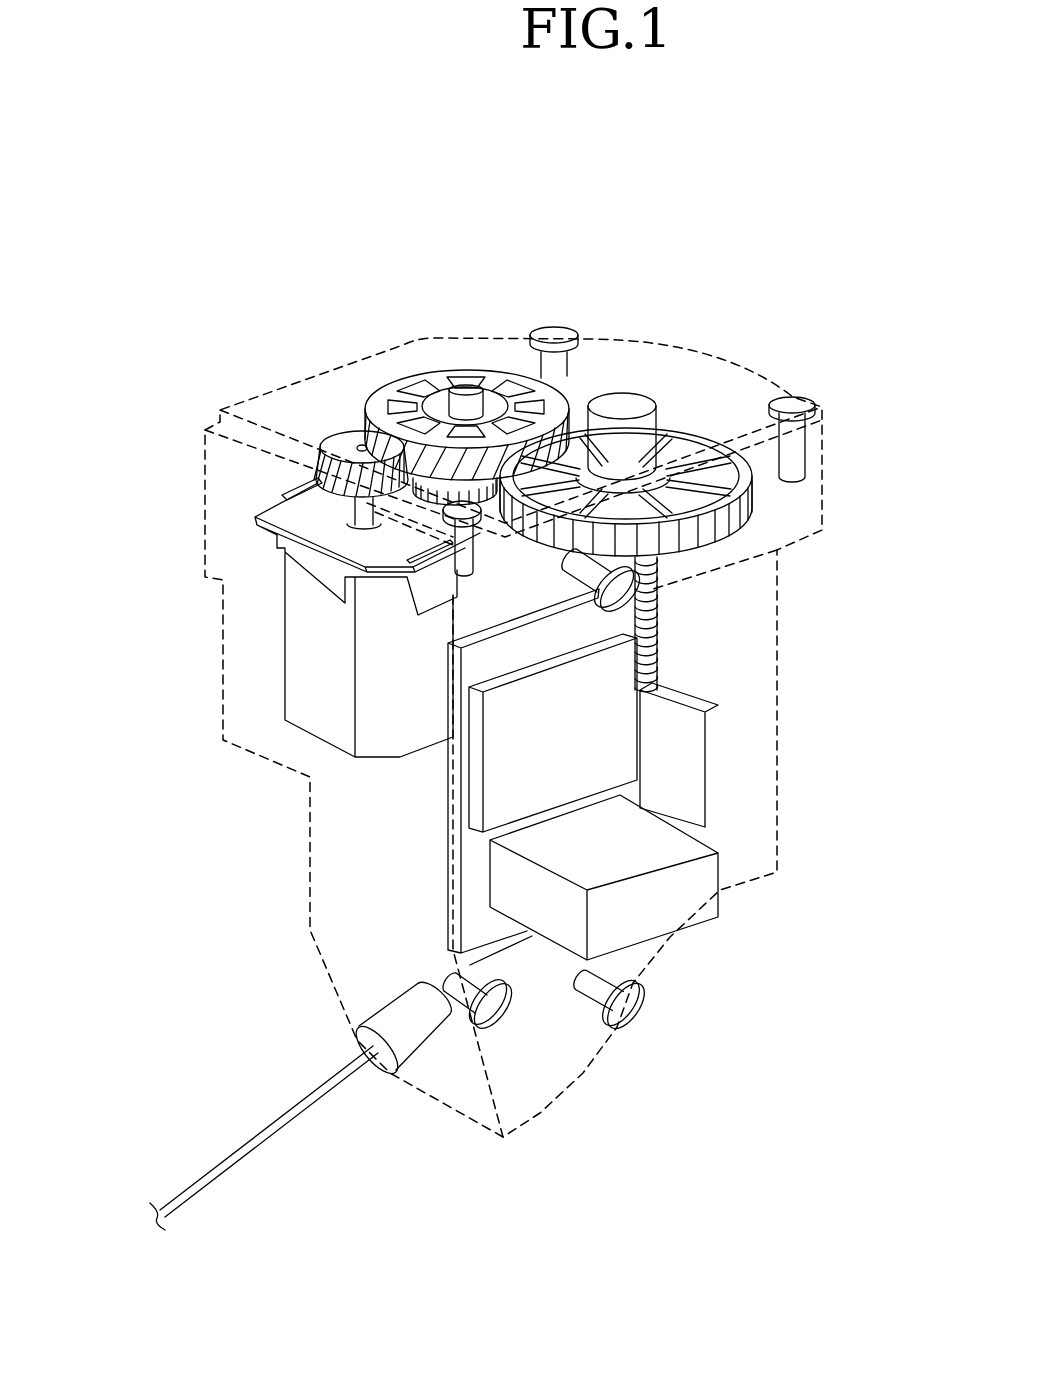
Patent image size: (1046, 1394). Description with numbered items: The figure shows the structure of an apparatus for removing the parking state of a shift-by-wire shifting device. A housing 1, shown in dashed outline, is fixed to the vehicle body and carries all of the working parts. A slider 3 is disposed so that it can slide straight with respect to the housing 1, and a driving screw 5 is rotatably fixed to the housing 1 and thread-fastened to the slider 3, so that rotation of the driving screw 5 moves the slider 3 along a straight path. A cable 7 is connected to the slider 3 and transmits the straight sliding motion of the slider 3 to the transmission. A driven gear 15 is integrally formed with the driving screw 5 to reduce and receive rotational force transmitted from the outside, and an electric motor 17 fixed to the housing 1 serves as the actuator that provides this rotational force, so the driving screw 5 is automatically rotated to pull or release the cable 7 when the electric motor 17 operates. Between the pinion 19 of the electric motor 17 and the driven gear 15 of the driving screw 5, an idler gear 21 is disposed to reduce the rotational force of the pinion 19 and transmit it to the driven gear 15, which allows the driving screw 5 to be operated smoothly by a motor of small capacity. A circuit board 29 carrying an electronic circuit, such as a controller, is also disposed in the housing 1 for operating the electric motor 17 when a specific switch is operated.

The housing 1 is at (225, 516).
The slider 3 is at (700, 761).
The driving screw 5 is at (637, 402).
The cable 7 is at (305, 1107).
The driven gear 15 is at (747, 497).
The electric motor 17 is at (308, 643).
The pinion 19 is at (347, 450).
The idler gear 21 is at (390, 398).
The circuit board 29 is at (453, 833).